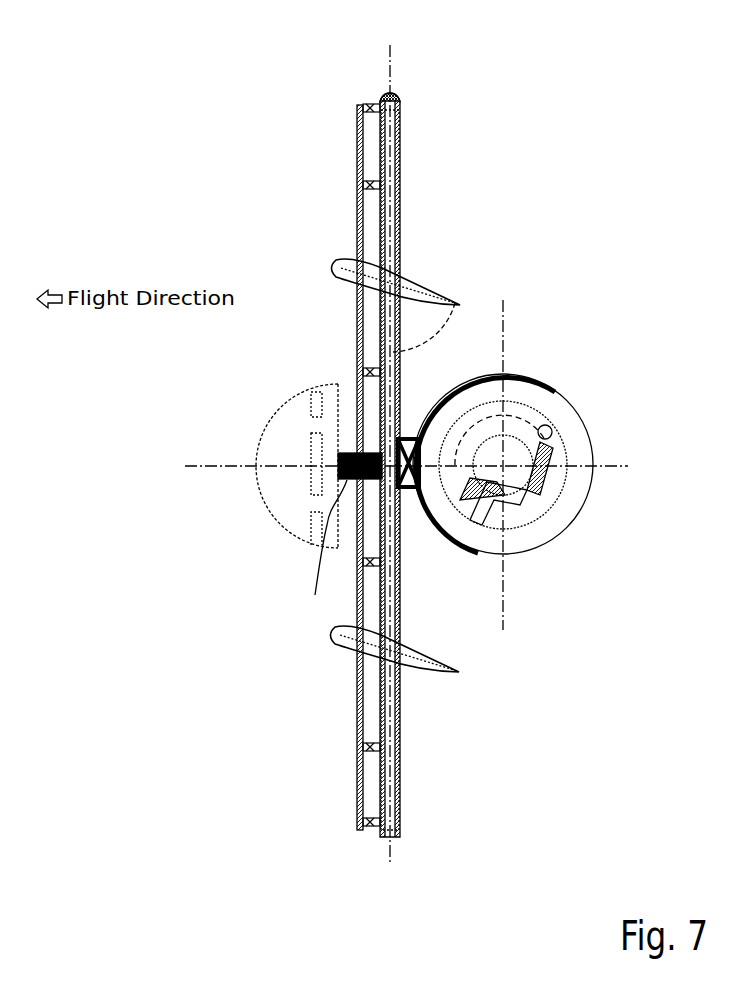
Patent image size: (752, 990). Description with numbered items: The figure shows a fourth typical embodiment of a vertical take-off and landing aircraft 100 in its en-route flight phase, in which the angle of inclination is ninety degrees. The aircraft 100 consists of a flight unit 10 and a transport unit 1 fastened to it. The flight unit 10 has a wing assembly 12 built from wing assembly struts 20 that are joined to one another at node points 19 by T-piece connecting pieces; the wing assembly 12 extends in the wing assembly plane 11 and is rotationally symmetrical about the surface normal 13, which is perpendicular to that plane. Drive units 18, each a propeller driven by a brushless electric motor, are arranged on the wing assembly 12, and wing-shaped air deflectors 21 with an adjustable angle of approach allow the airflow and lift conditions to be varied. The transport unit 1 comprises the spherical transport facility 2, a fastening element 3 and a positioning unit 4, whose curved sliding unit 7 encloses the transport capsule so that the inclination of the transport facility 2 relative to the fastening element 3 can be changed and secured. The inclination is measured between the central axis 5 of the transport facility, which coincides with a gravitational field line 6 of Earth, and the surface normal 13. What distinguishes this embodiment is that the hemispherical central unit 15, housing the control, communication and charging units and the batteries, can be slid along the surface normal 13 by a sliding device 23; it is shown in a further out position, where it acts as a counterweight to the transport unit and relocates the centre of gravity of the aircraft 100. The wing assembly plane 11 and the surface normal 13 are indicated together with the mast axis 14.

The aircraft 100 is at (163, 117).
The transport unit 1 is at (605, 405).
The transport facility 2 is at (567, 522).
The fastening element 3 is at (405, 490).
The positioning unit 4 is at (408, 463).
The central axis 5 is at (505, 607).
The gravitational field line 6 is at (500, 440).
The curved sliding unit 7 is at (520, 370).
The flight unit 10 is at (285, 648).
The wing assembly plane 11 is at (392, 57).
The wing assembly 12 is at (397, 148).
The surface normal 13 is at (232, 468).
The mast axis 14 is at (446, 465).
The central unit 15 is at (278, 413).
The drive unit 18 is at (360, 187).
The node point 19 is at (397, 103).
The wing assembly strut 20 is at (390, 470).
The air deflector 21 is at (347, 265).
The sliding device 23 is at (318, 557).